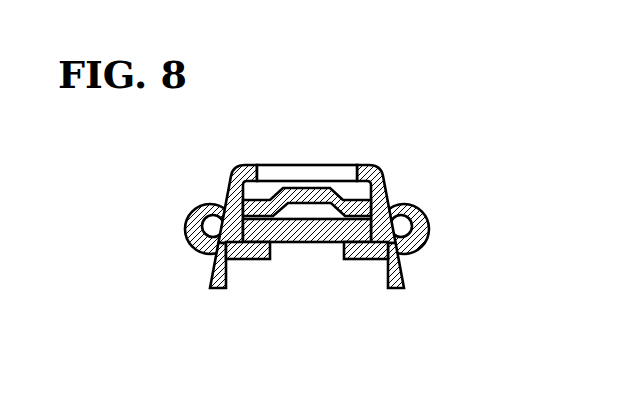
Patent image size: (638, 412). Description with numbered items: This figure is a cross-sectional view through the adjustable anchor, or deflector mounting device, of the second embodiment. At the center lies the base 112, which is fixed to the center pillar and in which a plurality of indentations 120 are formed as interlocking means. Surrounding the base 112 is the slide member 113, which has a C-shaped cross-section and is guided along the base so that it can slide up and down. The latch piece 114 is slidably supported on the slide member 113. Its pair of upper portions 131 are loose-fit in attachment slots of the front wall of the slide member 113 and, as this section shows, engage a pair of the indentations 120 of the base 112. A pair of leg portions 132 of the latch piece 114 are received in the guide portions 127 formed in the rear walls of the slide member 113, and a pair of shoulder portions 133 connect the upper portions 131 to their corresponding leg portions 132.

The base 112 is at (308, 242).
The slide member 113 is at (418, 188).
The latch piece 114 is at (331, 163).
The indentations 120 is at (403, 224).
The guide portions 127 is at (231, 260).
The upper portions 131 is at (389, 185).
The leg portions 132 is at (210, 276).
The shoulder portions 133 is at (186, 225).